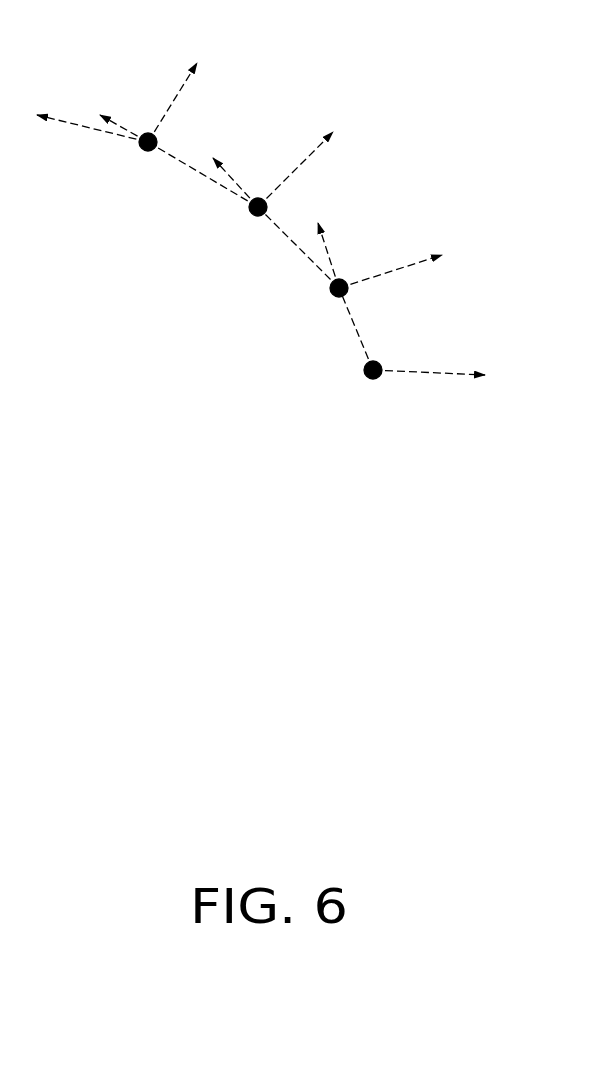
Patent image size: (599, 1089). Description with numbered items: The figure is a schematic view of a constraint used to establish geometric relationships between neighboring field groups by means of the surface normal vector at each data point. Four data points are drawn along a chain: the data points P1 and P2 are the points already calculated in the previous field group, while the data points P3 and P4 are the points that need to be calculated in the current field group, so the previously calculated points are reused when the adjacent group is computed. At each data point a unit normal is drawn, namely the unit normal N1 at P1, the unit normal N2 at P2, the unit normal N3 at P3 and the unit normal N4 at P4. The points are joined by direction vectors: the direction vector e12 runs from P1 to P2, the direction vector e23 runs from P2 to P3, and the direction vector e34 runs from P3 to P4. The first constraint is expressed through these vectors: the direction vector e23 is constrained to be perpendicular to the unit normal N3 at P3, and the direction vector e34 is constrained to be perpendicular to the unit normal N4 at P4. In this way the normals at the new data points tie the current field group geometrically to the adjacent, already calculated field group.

The data point P1 is at (356, 374).
The data point P2 is at (320, 294).
The data point P3 is at (251, 226).
The data point P4 is at (142, 160).
The unit normal N1 is at (518, 357).
The unit normal N2 is at (473, 240).
The unit normal N3 is at (372, 107).
The unit normal N4 is at (197, 22).
The direction vector e12 is at (350, 213).
The direction vector e23 is at (247, 137).
The direction vector e34 is at (112, 83).